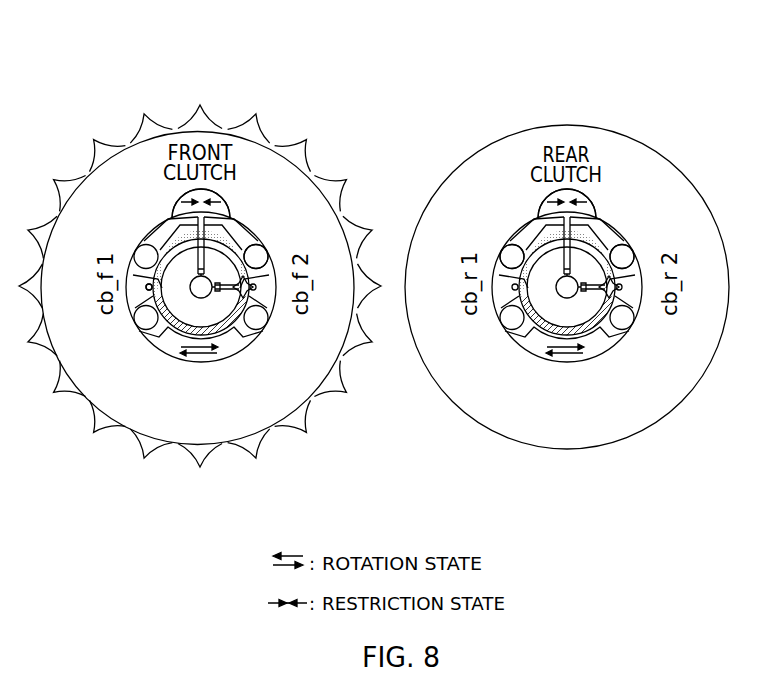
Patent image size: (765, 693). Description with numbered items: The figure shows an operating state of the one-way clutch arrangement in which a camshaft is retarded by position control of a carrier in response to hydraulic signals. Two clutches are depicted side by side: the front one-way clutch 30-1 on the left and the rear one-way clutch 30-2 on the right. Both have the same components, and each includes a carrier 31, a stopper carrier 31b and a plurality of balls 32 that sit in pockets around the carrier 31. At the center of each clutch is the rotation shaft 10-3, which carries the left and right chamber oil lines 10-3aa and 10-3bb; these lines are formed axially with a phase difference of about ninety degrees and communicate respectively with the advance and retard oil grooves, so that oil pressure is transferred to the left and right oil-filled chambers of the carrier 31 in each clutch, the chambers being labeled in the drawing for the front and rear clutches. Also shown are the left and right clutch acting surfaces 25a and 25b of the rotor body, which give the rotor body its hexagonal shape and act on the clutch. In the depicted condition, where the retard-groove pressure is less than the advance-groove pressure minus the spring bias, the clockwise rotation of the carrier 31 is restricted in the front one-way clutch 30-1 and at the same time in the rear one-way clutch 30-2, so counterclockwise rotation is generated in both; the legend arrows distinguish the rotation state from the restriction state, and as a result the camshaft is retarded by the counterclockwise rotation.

The front one-way clutch 30-1 is at (98, 193).
The rear one-way clutch 30-2 is at (645, 168).
The carrier 31 is at (183, 348).
The stopper carrier 31b is at (177, 218).
The ball 32 is at (146, 319).
The rotation shaft 10-3 is at (215, 305).
The left chamber oil line 10-3aa is at (208, 267).
The right chamber oil line 10-3bb is at (230, 272).
The left clutch acting surface 25a is at (137, 300).
The right clutch acting surface 25b is at (254, 268).